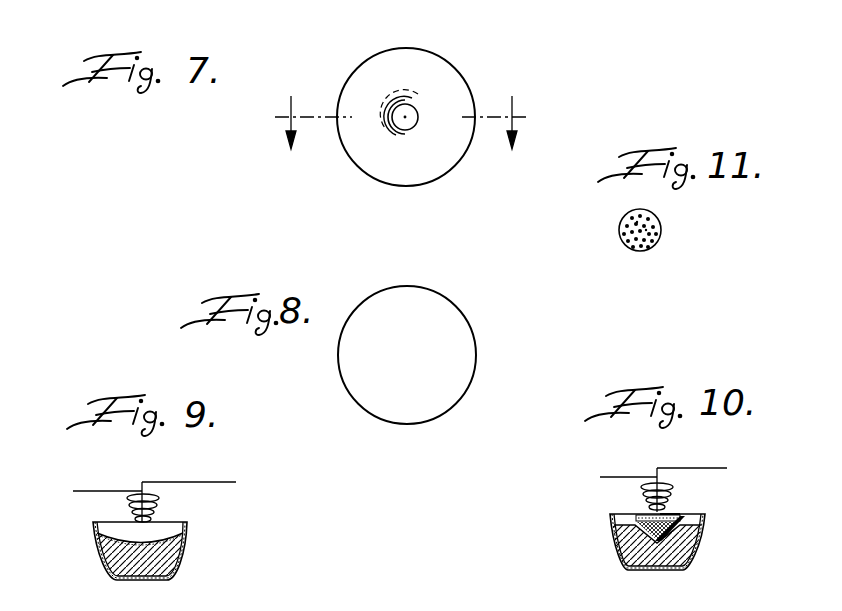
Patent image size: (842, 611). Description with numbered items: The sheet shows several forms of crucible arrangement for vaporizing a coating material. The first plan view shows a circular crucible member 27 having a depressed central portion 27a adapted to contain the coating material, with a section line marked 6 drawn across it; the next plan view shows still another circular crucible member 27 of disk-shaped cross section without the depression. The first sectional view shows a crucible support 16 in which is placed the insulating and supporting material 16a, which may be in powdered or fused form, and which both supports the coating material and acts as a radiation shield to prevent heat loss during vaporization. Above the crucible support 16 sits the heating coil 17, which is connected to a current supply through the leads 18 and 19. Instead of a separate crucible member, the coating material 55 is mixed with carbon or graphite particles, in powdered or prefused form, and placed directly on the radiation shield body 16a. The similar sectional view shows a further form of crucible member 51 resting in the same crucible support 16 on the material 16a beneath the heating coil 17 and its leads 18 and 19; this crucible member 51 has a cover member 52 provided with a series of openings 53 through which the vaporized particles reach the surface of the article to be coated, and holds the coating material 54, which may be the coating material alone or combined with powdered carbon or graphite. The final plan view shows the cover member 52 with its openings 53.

In FIG. 7, the section line 6- 6 is at (395, 122).
In FIG. 7, the crucible member 27 is at (447, 67).
In FIG. 8, the crucible member 27 is at (462, 327).
In FIG. 7, the depressed central portion 27a is at (410, 127).
In FIG. 9, the crucible support 16 is at (93, 525).
In FIG. 10, the crucible support 16 is at (700, 518).
In FIG. 9, the insulating and supporting material 16a is at (112, 550).
In FIG. 10, the insulating and supporting material 16a is at (622, 537).
In FIG. 9, the heating coil 17 is at (160, 497).
In FIG. 10, the heating coil 17 is at (675, 483).
In FIG. 9, the lead 18 is at (101, 478).
In FIG. 10, the lead 18 is at (622, 463).
In FIG. 9, the lead 19 is at (205, 473).
In FIG. 10, the lead 19 is at (705, 467).
In FIG. 10, the crucible member 51 is at (630, 513).
In FIG. 11, the cover member 52 is at (660, 222).
In FIG. 10, the cover member 52 is at (640, 516).
In FIG. 11, the openings 53 is at (660, 237).
In FIG. 10, the openings 53 is at (677, 513).
In FIG. 10, the coating material 54 is at (693, 545).
In FIG. 9, the coating material mixture 55 is at (163, 534).